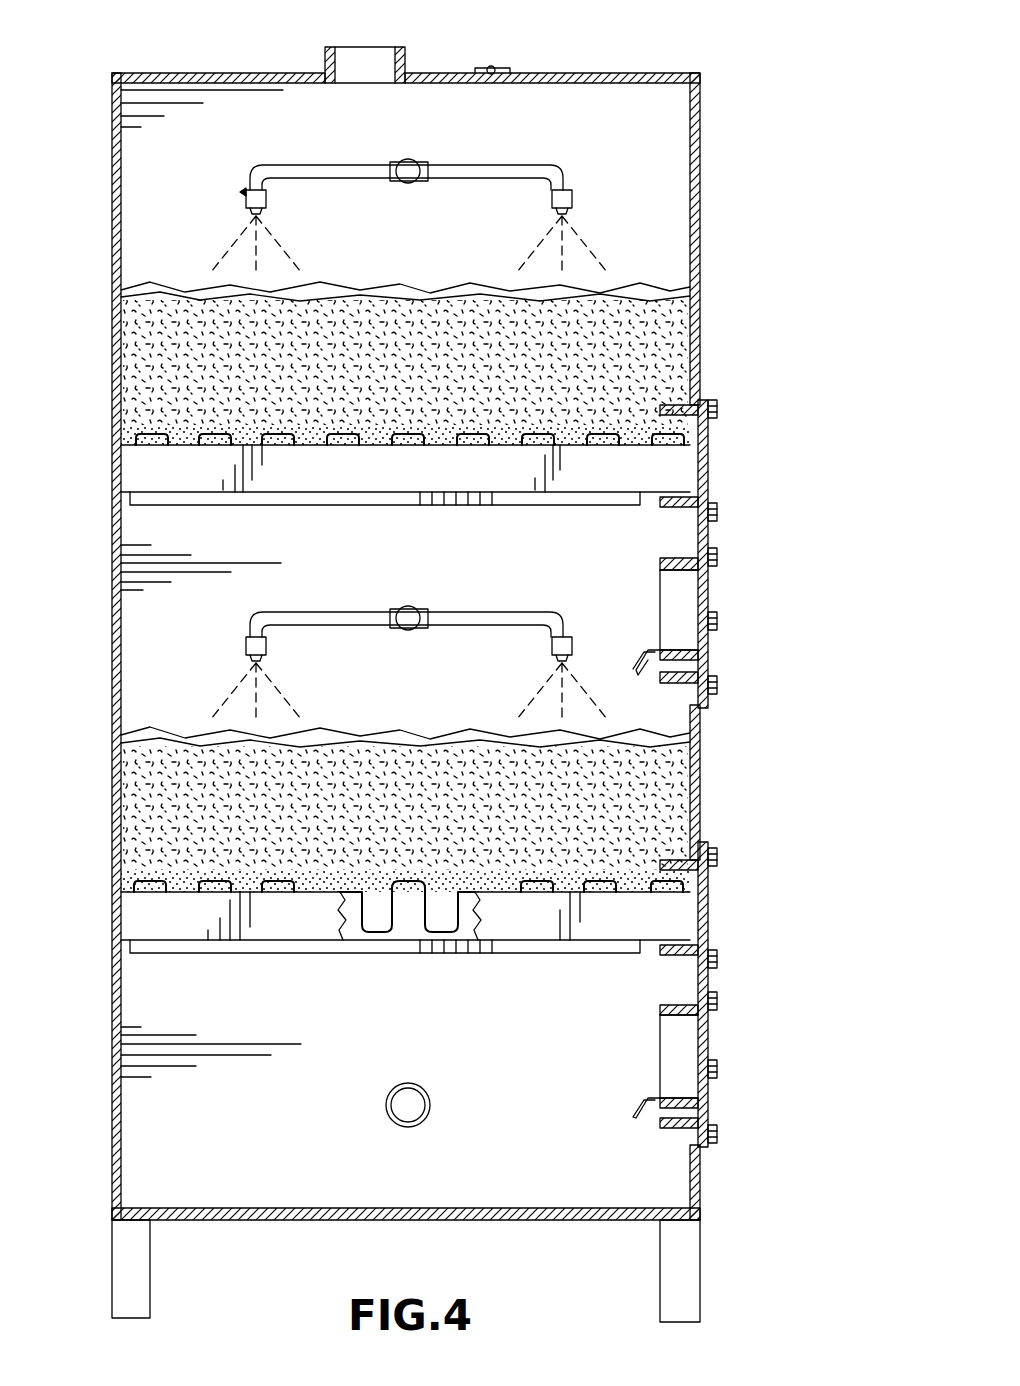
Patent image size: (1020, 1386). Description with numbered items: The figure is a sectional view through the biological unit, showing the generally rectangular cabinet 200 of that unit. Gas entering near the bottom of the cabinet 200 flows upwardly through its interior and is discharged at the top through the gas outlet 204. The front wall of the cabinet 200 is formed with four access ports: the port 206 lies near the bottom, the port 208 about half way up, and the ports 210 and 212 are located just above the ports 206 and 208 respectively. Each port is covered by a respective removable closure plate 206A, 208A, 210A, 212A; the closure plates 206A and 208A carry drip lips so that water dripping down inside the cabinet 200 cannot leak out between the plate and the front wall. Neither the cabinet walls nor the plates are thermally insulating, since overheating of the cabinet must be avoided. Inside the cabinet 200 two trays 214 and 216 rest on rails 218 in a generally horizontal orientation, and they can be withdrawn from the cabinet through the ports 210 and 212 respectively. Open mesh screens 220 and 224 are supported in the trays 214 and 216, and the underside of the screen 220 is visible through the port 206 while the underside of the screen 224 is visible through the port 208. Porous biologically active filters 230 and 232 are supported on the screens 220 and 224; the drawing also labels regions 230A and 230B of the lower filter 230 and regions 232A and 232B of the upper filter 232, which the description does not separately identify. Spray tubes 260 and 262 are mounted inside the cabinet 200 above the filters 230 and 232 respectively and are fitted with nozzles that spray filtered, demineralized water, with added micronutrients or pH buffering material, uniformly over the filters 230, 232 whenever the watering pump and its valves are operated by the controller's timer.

The cabinet 200 is at (108, 106).
The gas outlet 204 is at (370, 52).
The access port 206 is at (680, 1045).
The removable closure plate 206A is at (705, 1100).
The access port 208 is at (680, 595).
The removable closure plate 208A is at (705, 655).
The access port 210 is at (690, 880).
The removable closure plate 210A is at (705, 918).
The access port 212 is at (700, 437).
The removable closure plate 212A is at (705, 466).
The tray 214 is at (590, 950).
The tray 216 is at (570, 480).
The rails 218 is at (355, 505).
The open mesh screen 220 is at (358, 925).
The open mesh screen 224 is at (278, 447).
The porous biologically active filter 230 is at (178, 714).
The lower product bottom layer 230A is at (408, 925).
The lower product top surface 230B is at (414, 735).
The porous biologically active filter 232 is at (180, 268).
The upper product bottom layer 232A is at (440, 430).
The upper product top surface 232B is at (432, 285).
The spray tube 260 is at (500, 610).
The spray tube 262 is at (492, 160).